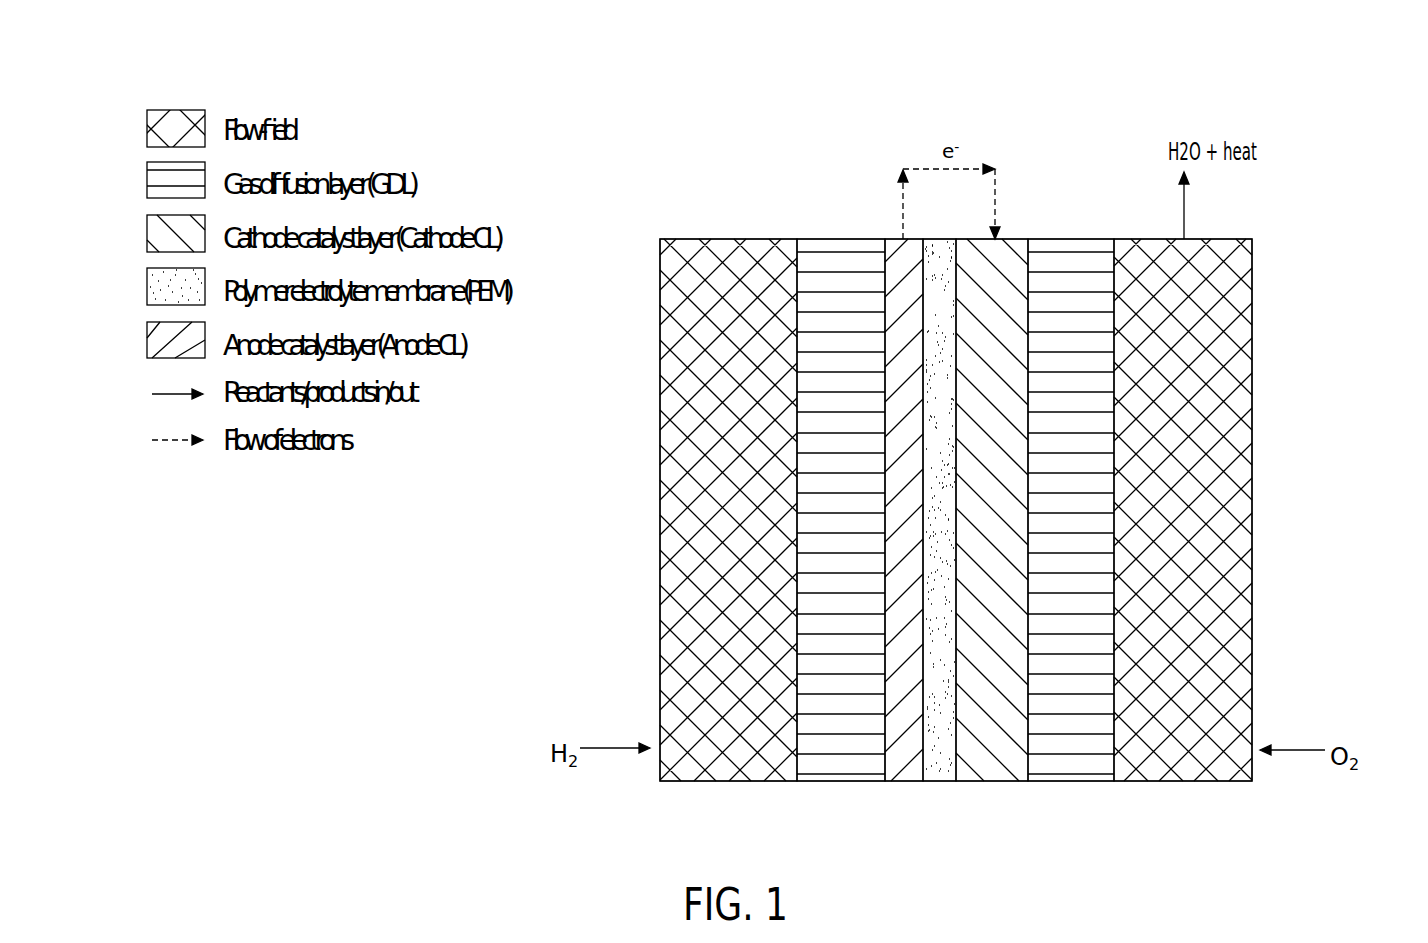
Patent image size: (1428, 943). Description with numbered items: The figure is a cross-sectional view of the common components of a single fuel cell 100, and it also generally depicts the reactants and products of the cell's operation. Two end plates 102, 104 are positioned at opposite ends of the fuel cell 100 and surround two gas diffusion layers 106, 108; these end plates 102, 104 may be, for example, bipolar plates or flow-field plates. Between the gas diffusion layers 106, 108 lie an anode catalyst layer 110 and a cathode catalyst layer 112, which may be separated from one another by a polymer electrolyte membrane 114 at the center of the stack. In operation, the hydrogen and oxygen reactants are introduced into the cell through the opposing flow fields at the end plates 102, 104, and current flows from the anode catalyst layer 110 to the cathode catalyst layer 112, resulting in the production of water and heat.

The fuel cell 100 is at (1292, 73).
The end plate 102 is at (687, 239).
The end plate 104 is at (1192, 782).
The gas diffusion layer 106 is at (803, 782).
The gas diffusion layer 108 is at (1062, 782).
The anode catalyst layer 110 is at (898, 239).
The cathode catalyst layer 112 is at (1008, 239).
The polymer electrolyte membrane 114 is at (933, 782).